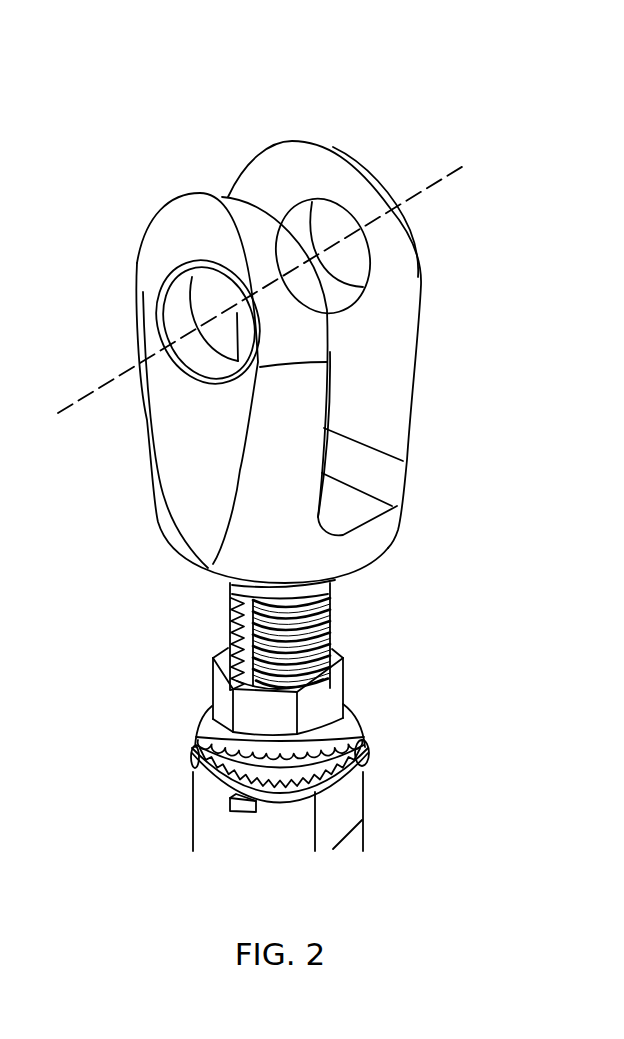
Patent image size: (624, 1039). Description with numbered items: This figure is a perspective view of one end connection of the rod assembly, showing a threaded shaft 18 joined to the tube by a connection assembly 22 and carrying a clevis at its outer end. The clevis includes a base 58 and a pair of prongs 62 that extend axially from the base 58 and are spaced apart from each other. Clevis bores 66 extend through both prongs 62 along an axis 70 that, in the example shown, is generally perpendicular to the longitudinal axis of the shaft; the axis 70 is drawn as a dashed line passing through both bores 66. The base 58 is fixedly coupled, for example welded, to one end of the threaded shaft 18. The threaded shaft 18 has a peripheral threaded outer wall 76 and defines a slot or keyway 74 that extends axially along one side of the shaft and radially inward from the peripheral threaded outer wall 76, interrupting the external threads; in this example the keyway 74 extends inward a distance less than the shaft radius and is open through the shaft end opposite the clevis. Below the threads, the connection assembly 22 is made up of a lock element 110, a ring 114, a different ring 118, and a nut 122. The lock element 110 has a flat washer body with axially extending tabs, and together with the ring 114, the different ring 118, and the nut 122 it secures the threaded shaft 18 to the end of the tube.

The threaded shaft 18 is at (230, 594).
The connection assembly 22 is at (178, 701).
The base 58 is at (370, 538).
The prongs 62 is at (398, 338).
The clevis bores 66 is at (293, 228).
The axis 70 is at (120, 383).
The keyway 74 is at (247, 647).
The peripheral threaded outer wall 76 is at (331, 609).
The lock element 110 is at (190, 771).
The ring 114 is at (282, 772).
The different ring 118 is at (258, 772).
The nut 122 is at (332, 699).